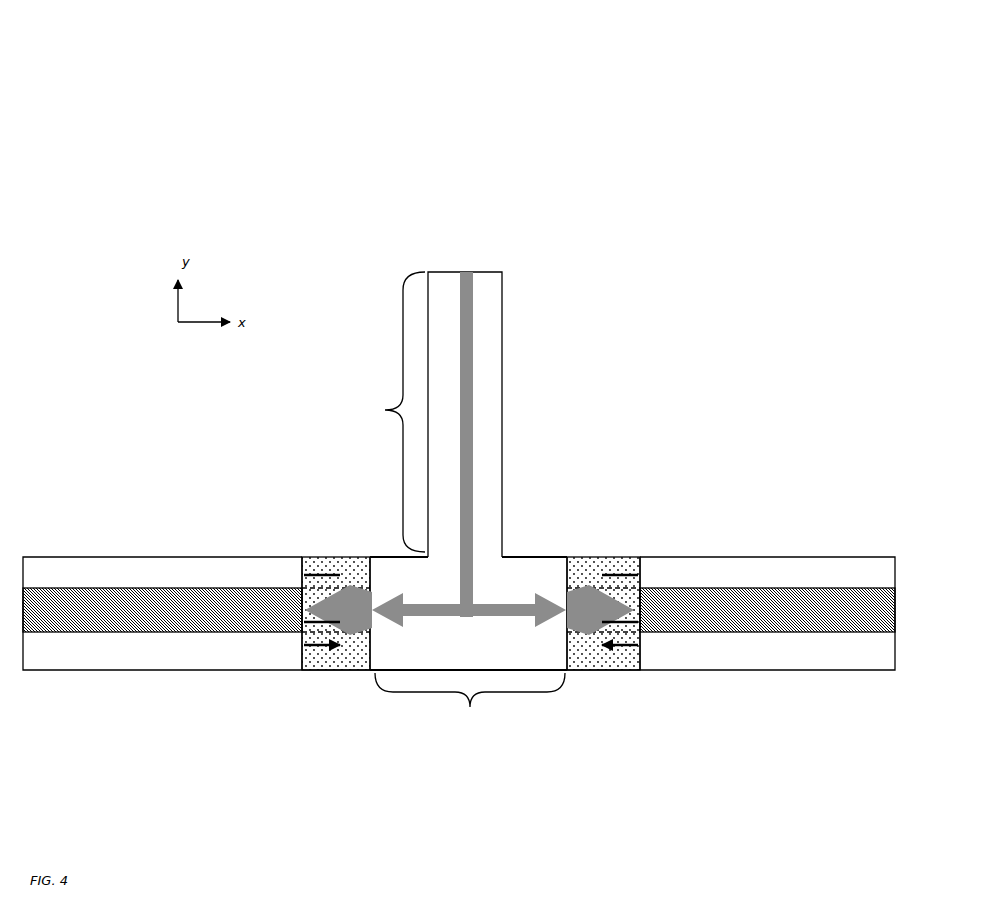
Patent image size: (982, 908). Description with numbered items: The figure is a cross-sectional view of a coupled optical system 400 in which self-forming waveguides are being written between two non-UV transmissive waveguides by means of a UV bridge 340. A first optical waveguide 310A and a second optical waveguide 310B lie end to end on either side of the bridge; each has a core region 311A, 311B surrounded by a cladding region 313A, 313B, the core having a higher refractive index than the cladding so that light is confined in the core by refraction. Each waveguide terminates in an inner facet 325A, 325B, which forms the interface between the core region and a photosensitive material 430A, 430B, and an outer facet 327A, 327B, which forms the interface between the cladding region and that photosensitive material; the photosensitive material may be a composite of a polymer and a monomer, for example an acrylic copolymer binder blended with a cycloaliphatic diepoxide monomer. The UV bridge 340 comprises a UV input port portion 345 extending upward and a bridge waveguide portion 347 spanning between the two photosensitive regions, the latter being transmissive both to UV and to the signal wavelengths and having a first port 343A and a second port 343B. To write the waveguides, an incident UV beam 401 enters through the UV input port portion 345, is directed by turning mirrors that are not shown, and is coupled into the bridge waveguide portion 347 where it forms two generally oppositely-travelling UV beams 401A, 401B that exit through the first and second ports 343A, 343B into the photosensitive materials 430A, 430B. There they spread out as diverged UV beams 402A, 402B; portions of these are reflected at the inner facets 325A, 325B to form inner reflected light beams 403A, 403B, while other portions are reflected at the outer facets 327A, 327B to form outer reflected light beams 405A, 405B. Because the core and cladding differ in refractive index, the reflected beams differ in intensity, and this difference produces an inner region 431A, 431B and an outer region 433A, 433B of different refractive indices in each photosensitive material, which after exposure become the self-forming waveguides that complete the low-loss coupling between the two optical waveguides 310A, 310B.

The coupled optical system 400 is at (690, 97).
The first optical waveguide 310A is at (77, 698).
The second optical waveguide 310B is at (825, 690).
The core region 311A is at (127, 627).
The core region 311B is at (758, 632).
The cladding region 313A is at (158, 647).
The cladding region 313B is at (787, 647).
The inner facet 325A is at (300, 614).
The inner facet 325B is at (663, 624).
The outer facet 327A is at (302, 572).
The outer facet 327B is at (640, 568).
The UV bridge 340 is at (522, 408).
The incident UV beam 401 is at (474, 360).
The UV input port portion 345 is at (383, 412).
The bridge waveguide portion 347 is at (466, 623).
The UV beam 401A is at (403, 572).
The UV beam 401B is at (530, 572).
The first port 343A is at (375, 622).
The second port 343B is at (565, 622).
The photosensitive material 430A is at (340, 693).
The photosensitive material 430B is at (613, 685).
The diverged UV beam 402A is at (335, 600).
The diverged UV beam 402B is at (612, 600).
The inner reflected light beam 403A is at (308, 672).
The inner reflected light beam 403B is at (641, 672).
The outer reflected light beam 405A is at (325, 596).
The outer reflected light beam 405B is at (628, 596).
The inner region 431A is at (302, 587).
The inner region 431B is at (642, 588).
The outer region 433A is at (348, 655).
The outer region 433B is at (590, 655).